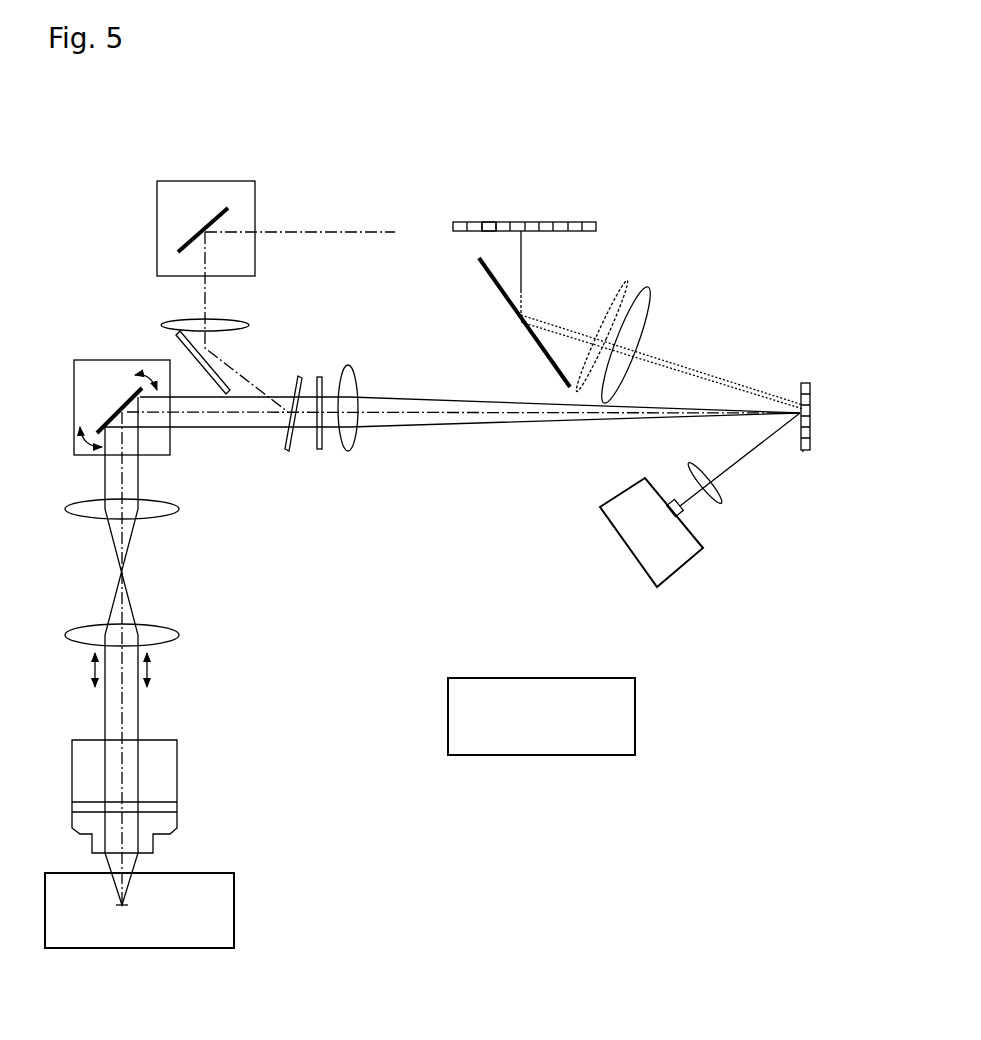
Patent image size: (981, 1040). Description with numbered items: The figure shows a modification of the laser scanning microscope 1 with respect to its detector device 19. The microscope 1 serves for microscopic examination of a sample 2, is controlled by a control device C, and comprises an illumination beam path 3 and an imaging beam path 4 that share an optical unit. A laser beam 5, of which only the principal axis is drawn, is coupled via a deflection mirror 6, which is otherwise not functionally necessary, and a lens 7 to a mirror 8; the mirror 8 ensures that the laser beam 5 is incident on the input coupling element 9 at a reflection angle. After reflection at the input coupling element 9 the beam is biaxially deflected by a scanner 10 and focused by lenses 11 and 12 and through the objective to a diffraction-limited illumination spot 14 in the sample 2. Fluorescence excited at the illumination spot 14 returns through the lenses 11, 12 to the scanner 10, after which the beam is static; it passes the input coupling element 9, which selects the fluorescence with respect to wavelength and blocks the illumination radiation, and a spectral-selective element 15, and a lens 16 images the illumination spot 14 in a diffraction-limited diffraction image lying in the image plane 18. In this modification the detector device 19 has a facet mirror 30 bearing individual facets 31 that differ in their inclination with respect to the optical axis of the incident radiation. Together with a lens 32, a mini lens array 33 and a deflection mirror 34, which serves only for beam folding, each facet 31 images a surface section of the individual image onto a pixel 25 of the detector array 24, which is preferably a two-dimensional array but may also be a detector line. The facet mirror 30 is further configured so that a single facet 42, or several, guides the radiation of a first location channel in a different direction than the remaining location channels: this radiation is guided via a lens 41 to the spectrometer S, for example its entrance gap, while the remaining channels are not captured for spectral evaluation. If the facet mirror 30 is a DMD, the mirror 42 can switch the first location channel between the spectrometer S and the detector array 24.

The laser scanning microscope 1 is at (492, 920).
The sample 2 is at (212, 938).
The illumination beam path 3 is at (100, 278).
The imaging beam path 4 is at (453, 584).
The laser beam 5 is at (370, 230).
The deflection mirror 6 is at (218, 182).
The lens 7 is at (225, 320).
The mirror 8 is at (178, 335).
The input coupling element 9 is at (290, 450).
The scanner 10 is at (157, 518).
The lens 11 is at (170, 643).
The lens 12 is at (173, 755).
The illumination spot 14 is at (120, 910).
The spectral-selective element 15 is at (313, 370).
The lens 16 is at (350, 363).
The image plane 18 is at (803, 450).
The detector device 19 is at (718, 188).
The detector array 24 is at (545, 222).
The pixel 25 is at (492, 222).
The facet mirror 30 is at (805, 383).
The facets 31 is at (800, 402).
The lens 32 is at (645, 290).
The mini lens array 33 is at (605, 290).
The deflection mirror 34 is at (520, 316).
The lens 41 is at (725, 504).
The facet 42 is at (767, 442).
The spectrometer S is at (667, 562).
The control device C is at (612, 743).